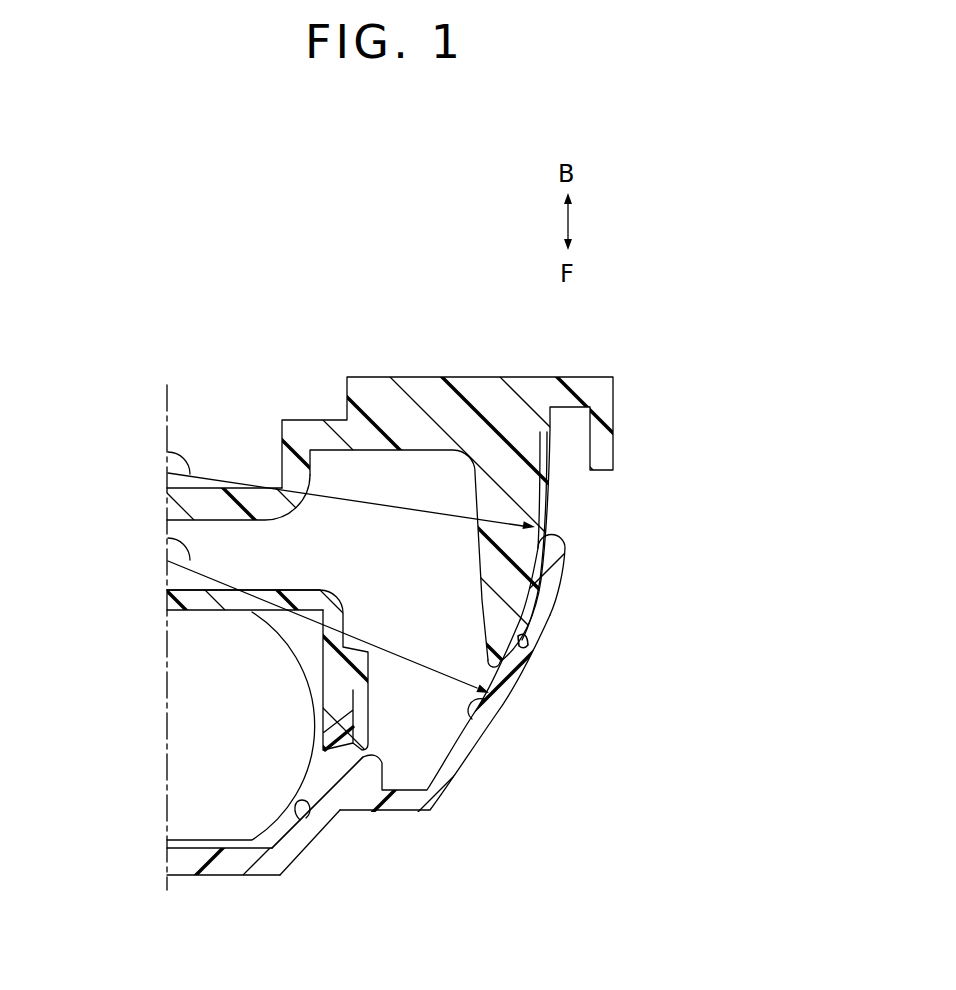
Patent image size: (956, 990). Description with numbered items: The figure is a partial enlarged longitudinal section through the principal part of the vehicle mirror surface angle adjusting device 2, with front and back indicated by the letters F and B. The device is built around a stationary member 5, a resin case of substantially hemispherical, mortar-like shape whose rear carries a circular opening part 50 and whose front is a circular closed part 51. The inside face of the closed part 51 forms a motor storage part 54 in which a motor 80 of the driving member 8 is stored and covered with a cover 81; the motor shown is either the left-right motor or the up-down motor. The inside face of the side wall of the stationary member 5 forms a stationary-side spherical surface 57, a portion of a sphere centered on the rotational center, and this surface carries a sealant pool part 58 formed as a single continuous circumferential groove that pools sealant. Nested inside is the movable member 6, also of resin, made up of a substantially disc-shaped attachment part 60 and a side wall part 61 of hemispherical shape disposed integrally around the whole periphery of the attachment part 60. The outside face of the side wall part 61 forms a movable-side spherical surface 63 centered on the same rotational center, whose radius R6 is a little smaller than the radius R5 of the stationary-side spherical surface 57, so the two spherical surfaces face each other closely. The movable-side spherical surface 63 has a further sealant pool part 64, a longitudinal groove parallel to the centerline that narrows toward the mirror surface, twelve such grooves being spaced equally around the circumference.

The vehicle mirror surface angle adjusting device 2 is at (212, 322).
The stationary member 5 is at (407, 829).
The movable member 6 is at (370, 370).
The driving member 8 is at (155, 630).
The opening part 50 is at (560, 538).
The closed part 51 is at (230, 867).
The motor storage part 54 is at (297, 808).
The stationary-side spherical surface 57 is at (477, 717).
The sealant pool part 58 is at (524, 642).
The attachment part 60 is at (195, 499).
The side wall part 61 is at (473, 548).
The movable-side spherical surface 63 is at (541, 517).
The sealant pool part 64 is at (541, 496).
The motor 80 is at (175, 765).
The cover 81 is at (195, 582).
The radius of stationary-side spherical surface R5 is at (168, 537).
The radius of movable-side spherical surface R6 is at (168, 452).